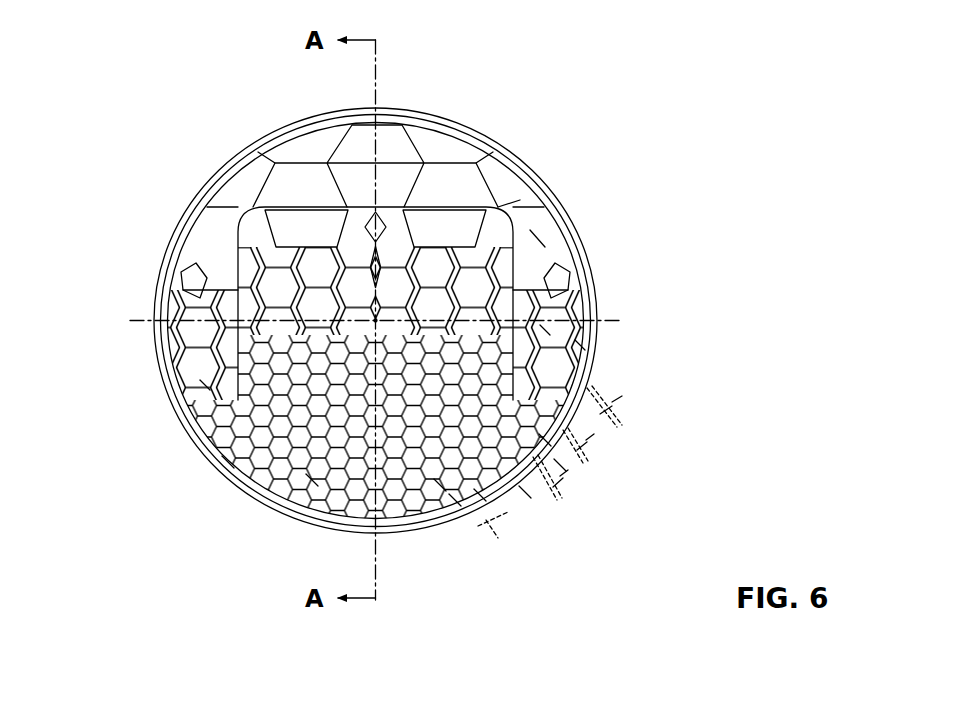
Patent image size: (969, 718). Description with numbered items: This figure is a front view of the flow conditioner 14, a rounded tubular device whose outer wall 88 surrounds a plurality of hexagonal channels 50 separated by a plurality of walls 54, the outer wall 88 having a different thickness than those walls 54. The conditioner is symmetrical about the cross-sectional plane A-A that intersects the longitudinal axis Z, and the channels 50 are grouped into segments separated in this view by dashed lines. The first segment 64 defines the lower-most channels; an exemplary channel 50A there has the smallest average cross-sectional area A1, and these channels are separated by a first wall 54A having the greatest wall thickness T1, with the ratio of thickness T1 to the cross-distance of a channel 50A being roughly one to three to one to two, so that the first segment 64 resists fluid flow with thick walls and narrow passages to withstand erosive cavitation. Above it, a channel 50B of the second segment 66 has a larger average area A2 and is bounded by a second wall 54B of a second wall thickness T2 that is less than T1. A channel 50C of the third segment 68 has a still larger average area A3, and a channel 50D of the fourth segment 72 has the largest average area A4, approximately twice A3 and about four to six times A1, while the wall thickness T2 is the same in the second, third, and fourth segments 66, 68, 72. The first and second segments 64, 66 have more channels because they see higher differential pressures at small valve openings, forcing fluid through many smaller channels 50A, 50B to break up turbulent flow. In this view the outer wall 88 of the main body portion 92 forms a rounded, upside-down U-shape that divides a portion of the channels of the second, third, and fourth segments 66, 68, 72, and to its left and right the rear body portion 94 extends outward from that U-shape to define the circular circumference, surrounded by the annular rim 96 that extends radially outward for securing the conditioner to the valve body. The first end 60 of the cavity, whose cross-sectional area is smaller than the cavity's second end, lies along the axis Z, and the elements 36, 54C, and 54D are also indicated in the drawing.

The flow conditioner 14 is at (660, 88).
The outer cell 36 is at (250, 180).
The channels 50 is at (455, 500).
The channel of the first segment 50A is at (345, 495).
The channel of the second segment 50B is at (245, 425).
The channel of the third segment 50C is at (195, 328).
The channel of the fourth segment 50D is at (210, 248).
The walls 54 is at (312, 480).
The first wall 54A is at (525, 492).
The second wall 54B is at (560, 465).
The third cell wall 54C is at (545, 330).
The fourth cell wall 54D is at (520, 200).
The first end of the cavity 60 is at (480, 495).
The first segment 64 is at (440, 485).
The second segment 66 is at (545, 440).
The third segment 68 is at (580, 345).
The fourth segment 72 is at (535, 237).
The outer wall 88 is at (308, 204).
The main body portion 92 is at (500, 207).
The rear body portion 94 is at (560, 252).
The annular rim 96 is at (400, 117).
The longitudinal axis Z is at (380, 315).
The average cross-sectional area of first segment channel A1 is at (330, 480).
The average cross-sectional area of second segment channel A2 is at (228, 462).
The average cross-sectional area of third segment channel A3 is at (205, 385).
The average cross-sectional area of fourth segment channel A4 is at (303, 183).
The first wall thickness T1 is at (500, 528).
The second wall thickness T2 is at (622, 430).